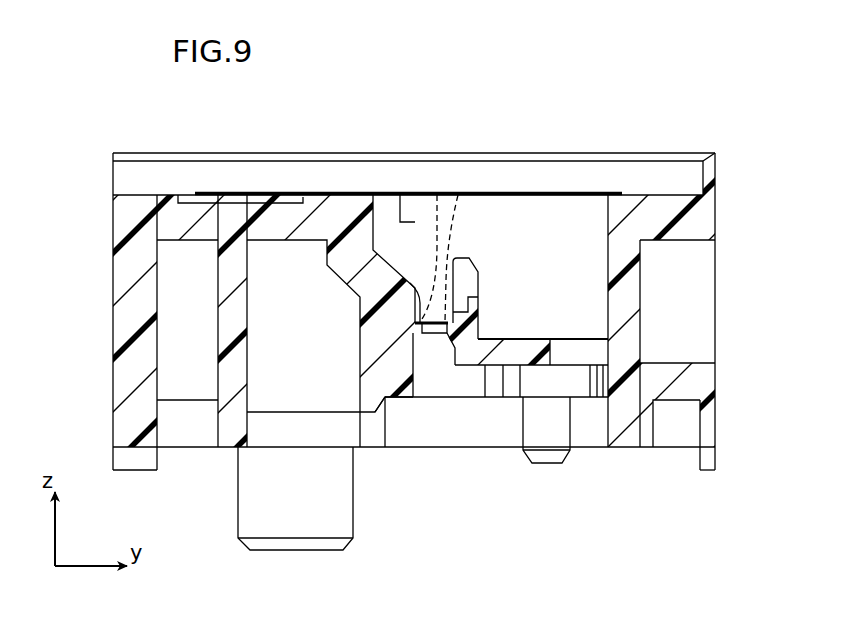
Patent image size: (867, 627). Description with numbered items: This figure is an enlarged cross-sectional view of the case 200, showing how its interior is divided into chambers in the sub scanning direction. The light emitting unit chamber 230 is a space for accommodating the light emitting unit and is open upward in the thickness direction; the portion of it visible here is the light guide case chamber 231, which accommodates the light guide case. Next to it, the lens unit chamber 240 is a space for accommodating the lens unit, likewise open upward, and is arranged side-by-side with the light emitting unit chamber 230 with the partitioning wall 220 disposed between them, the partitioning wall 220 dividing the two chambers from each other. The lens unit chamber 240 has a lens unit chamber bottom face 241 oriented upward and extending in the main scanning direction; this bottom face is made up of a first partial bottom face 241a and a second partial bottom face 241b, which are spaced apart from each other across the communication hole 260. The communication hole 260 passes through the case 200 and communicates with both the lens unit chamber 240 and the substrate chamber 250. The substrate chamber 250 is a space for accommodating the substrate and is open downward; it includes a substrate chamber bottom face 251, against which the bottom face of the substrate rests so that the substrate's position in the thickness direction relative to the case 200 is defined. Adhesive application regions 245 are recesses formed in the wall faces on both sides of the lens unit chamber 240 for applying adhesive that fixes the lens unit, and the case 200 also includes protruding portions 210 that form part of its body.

The case 200 is at (120, 110).
The protruding portions 210 is at (378, 252).
The partitioning wall 220 is at (467, 262).
The light emitting unit chamber 230 is at (433, 313).
The light guide case chamber 231 is at (553, 265).
The lens unit chamber 240 is at (428, 268).
The lens unit chamber bottom face 241 is at (472, 169).
The first partial bottom face 241a is at (438, 195).
The second partial bottom face 241b is at (458, 195).
The adhesive application region 245 is at (400, 248).
The substrate chamber 250 is at (500, 432).
The substrate chamber bottom face 251 is at (397, 399).
The communication hole 260 is at (432, 334).